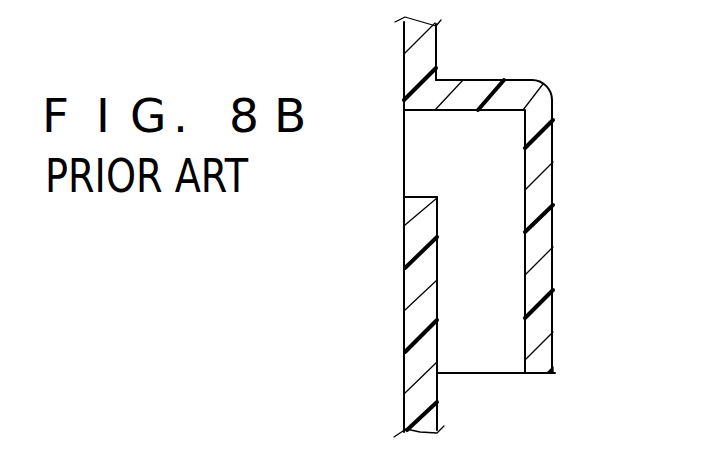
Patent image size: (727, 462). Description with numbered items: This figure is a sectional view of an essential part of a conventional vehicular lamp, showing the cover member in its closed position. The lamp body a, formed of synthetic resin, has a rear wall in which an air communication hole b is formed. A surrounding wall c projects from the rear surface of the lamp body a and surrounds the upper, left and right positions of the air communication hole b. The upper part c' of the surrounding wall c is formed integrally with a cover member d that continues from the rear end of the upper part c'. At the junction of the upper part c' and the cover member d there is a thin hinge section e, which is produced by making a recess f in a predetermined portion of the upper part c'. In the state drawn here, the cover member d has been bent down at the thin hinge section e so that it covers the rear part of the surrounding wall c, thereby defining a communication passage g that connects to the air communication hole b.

The lamp body a is at (403, 62).
The air communication hole b is at (428, 112).
The surrounding wall c is at (496, 397).
The upper part of the surrounding wall c' is at (473, 61).
The cover member d is at (553, 268).
The hinge section e is at (542, 105).
The recess f is at (545, 88).
The communication passage g is at (488, 226).